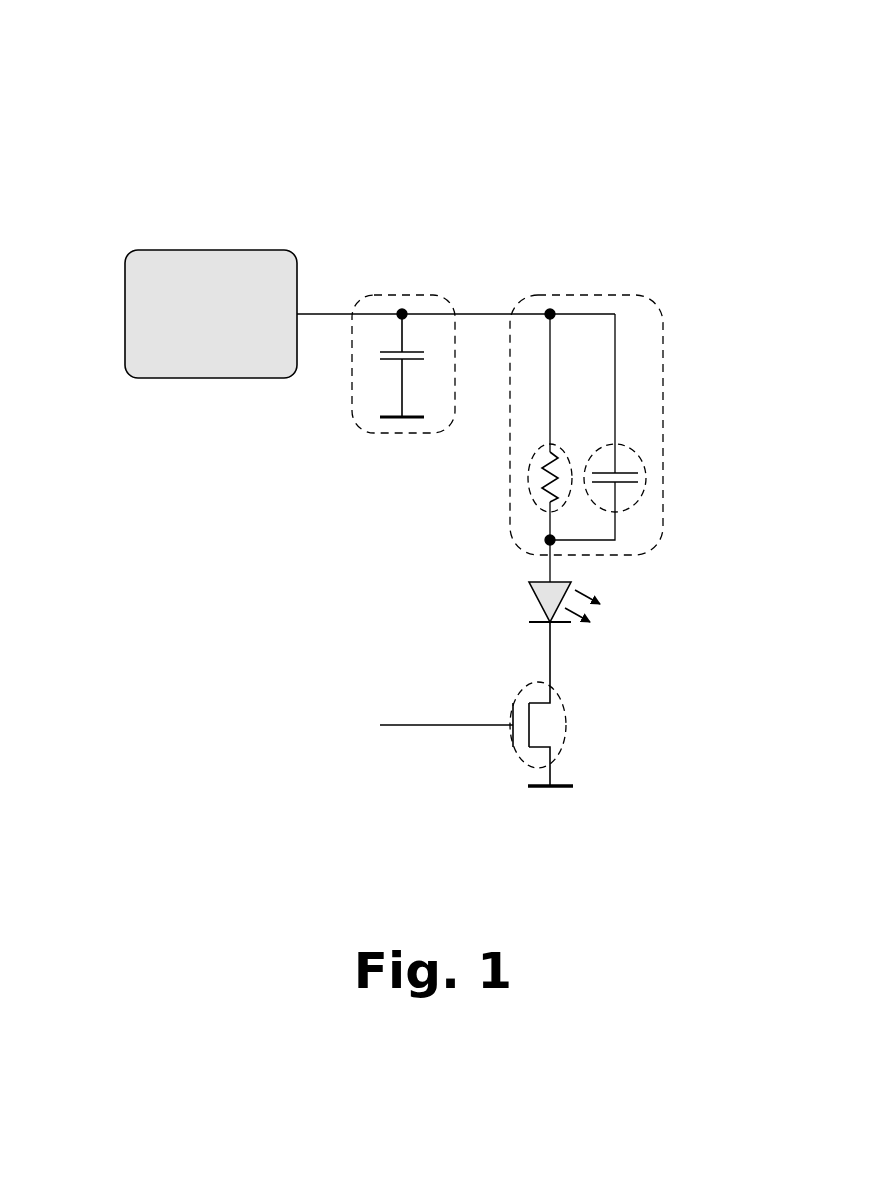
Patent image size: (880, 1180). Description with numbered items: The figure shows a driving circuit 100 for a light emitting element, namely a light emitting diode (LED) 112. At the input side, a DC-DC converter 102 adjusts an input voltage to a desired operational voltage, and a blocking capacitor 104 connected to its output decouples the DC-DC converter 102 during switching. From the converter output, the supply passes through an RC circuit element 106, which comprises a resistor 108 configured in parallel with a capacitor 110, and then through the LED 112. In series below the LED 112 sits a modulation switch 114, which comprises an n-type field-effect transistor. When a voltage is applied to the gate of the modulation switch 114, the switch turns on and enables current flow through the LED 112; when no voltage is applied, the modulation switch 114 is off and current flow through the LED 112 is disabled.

The driving circuit 100 is at (104, 54).
The DC-DC converter 102 is at (268, 246).
The blocking capacitor 104 is at (434, 298).
The RC circuit element 106 is at (621, 296).
The resistor 108 is at (530, 474).
The capacitor 110 is at (646, 474).
The light emitting diode (LED) 112 is at (526, 578).
The modulation switch 114 is at (526, 682).